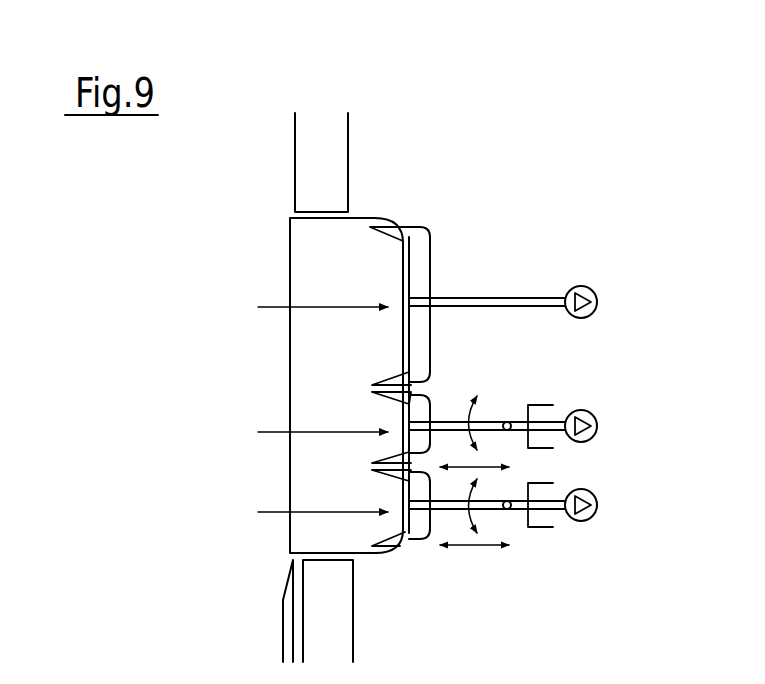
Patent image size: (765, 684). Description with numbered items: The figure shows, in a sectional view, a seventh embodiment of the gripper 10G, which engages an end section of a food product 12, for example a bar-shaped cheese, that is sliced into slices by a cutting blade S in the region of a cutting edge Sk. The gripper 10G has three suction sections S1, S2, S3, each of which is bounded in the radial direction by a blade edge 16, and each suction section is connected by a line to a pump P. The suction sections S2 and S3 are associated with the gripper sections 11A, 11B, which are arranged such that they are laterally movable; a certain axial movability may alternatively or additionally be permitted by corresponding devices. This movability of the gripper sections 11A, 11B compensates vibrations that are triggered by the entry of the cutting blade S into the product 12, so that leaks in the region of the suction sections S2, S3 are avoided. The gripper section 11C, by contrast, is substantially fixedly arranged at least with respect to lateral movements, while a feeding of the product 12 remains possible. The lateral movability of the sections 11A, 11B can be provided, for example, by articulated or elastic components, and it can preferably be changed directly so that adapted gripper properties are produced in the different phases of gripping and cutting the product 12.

The gripper 10G is at (512, 104).
The gripper section 11A is at (497, 404).
The gripper section 11B is at (524, 543).
The gripper section 11C is at (494, 248).
The food product 12 is at (290, 378).
The blade edge 16 is at (388, 226).
The pump P is at (504, 387).
The cutting edge Sk is at (338, 143).
The cutting blade S is at (296, 645).
The suction section S1 is at (307, 307).
The suction section S2 is at (307, 432).
The suction section S3 is at (307, 512).